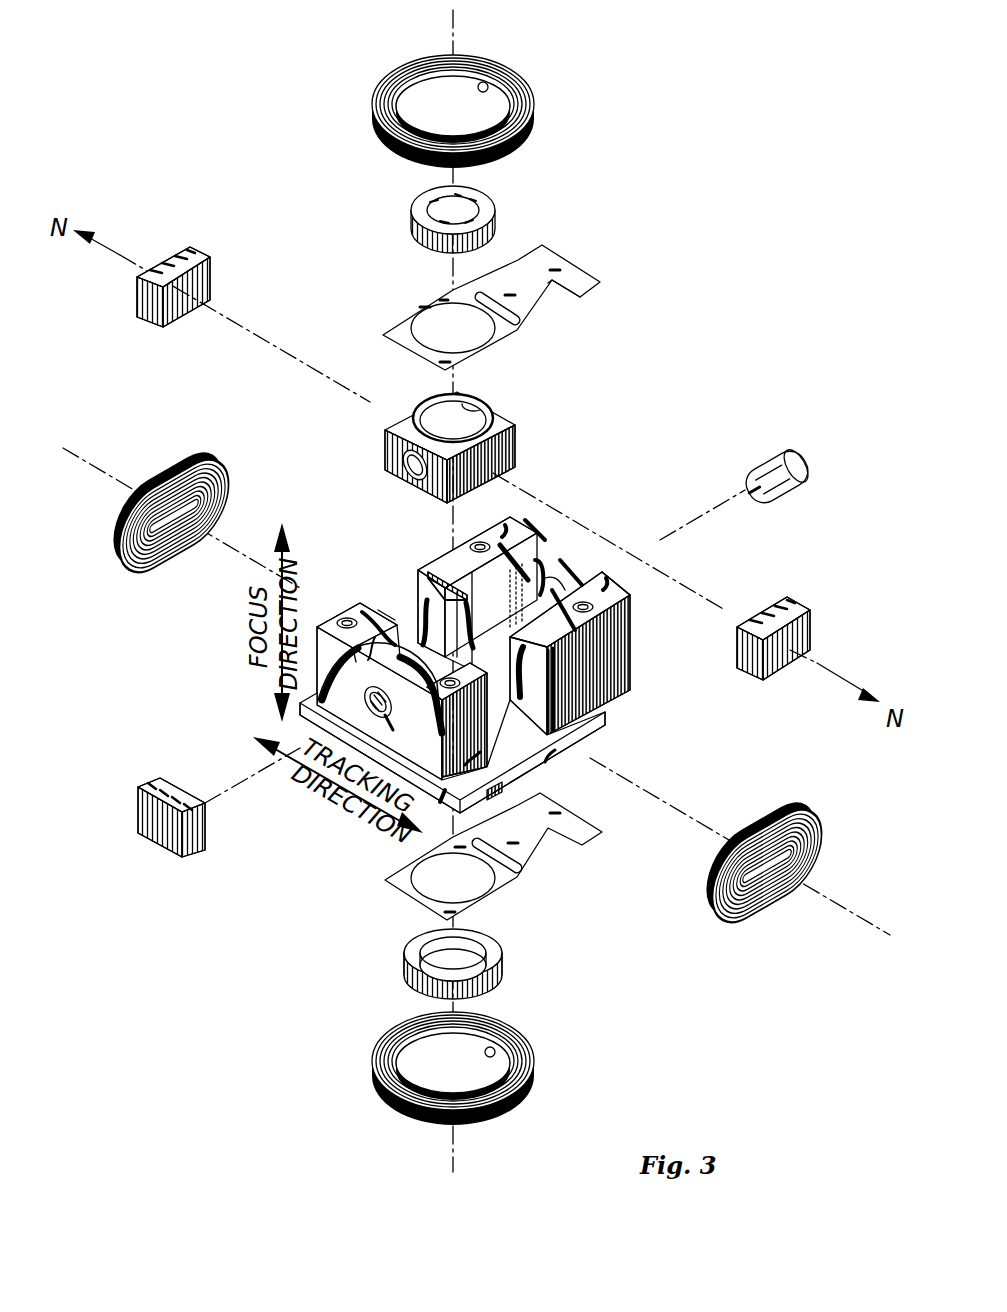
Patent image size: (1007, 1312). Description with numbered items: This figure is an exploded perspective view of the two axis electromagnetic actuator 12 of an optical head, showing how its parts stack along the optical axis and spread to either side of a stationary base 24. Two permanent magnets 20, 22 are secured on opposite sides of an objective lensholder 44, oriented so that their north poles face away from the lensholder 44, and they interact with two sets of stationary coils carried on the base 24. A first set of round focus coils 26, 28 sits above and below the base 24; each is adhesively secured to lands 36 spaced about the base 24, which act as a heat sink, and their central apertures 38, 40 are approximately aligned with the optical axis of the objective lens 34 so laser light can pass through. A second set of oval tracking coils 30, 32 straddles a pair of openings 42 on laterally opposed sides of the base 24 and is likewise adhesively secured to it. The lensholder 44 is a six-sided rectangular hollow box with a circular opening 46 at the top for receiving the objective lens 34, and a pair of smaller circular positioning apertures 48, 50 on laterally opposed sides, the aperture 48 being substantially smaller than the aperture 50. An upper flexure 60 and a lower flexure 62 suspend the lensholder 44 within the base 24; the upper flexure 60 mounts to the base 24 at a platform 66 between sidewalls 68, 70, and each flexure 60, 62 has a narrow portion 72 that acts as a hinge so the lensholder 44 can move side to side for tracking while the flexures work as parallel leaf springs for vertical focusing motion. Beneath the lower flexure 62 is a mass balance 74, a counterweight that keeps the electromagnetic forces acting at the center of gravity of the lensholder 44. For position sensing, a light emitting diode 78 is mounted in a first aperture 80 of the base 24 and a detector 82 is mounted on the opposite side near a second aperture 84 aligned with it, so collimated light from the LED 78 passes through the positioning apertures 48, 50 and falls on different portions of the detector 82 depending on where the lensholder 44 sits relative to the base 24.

The actuator 12 is at (780, 115).
The permanent magnet 20 is at (164, 264).
The permanent magnet 22 is at (793, 596).
The base 24 is at (500, 665).
The focus coil 26 is at (532, 119).
The focus coil 28 is at (373, 1071).
The tracking coil 30 is at (203, 462).
The tracking coil 32 is at (803, 808).
The objective lens 34 is at (491, 203).
The land 36 is at (384, 610).
The central aperture 38 is at (490, 84).
The central aperture 40 is at (497, 1052).
The opening 42 is at (411, 620).
The objective lensholder 44 is at (473, 433).
The circular opening 46 is at (458, 406).
The positioning aperture 48 is at (407, 477).
The positioning aperture 50 is at (490, 418).
The upper flexure 60 is at (563, 260).
The lower flexure 62 is at (385, 881).
The platform 66 is at (536, 558).
The sidewall 68 is at (540, 530).
The sidewall 70 is at (608, 573).
The narrow portion 72 is at (548, 283).
The mass balance 74 is at (508, 963).
The light emitting diode 78 is at (798, 452).
The first aperture 80 is at (563, 572).
The detector 82 is at (140, 794).
The second aperture 84 is at (402, 720).